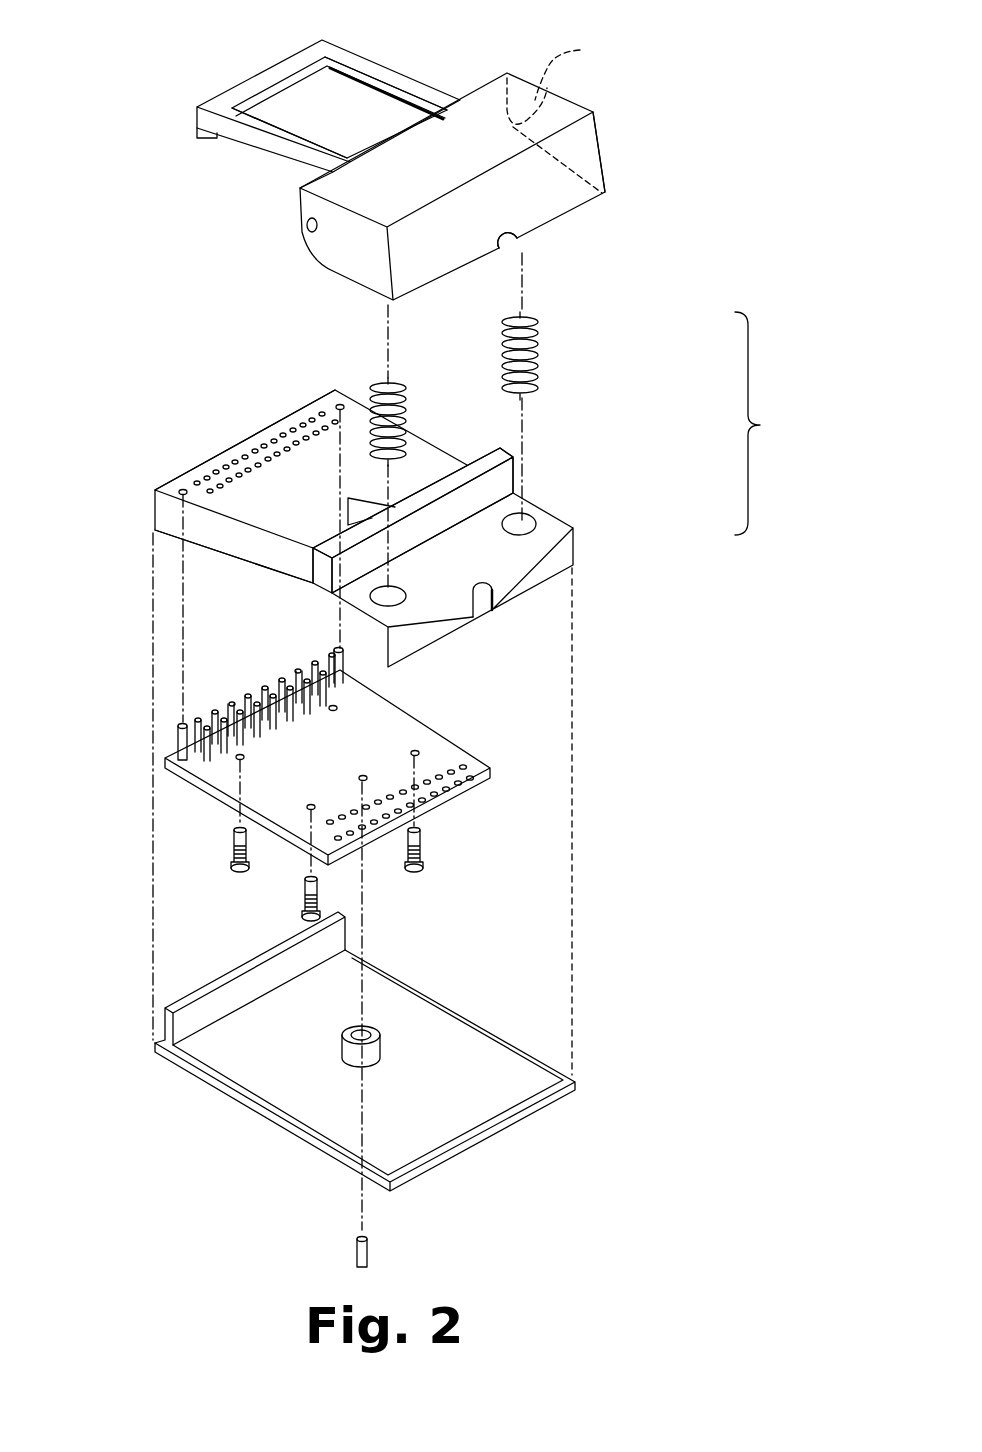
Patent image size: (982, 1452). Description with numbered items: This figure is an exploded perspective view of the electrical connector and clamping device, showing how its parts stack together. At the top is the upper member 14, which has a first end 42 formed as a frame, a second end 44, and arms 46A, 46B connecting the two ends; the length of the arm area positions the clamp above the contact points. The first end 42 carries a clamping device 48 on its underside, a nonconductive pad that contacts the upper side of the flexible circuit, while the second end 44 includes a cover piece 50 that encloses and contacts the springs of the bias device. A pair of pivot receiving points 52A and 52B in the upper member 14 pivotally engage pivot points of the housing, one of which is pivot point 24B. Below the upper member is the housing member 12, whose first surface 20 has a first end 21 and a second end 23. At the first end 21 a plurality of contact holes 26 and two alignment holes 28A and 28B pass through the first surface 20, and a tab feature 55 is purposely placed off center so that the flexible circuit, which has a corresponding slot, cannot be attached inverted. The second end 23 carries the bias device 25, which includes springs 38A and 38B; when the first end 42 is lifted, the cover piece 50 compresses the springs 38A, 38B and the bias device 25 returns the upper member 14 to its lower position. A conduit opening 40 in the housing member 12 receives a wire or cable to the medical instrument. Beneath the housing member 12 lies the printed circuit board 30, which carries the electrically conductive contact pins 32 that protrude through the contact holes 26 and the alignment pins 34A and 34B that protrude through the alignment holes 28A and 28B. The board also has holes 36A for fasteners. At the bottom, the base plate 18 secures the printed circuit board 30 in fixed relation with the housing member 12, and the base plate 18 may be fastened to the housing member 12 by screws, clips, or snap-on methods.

The housing member 12 is at (197, 563).
The upper member 14 is at (615, 117).
The base plate 18 is at (285, 1150).
The first surface 20 is at (163, 473).
The first end 21 is at (215, 430).
The second end 23 is at (587, 529).
The pivot point 24B is at (517, 460).
The bias device 25 is at (768, 423).
The contact holes 26 is at (286, 420).
The alignment hole 28A is at (177, 491).
The alignment hole 28B is at (340, 400).
The printed circuit board 30 is at (485, 800).
The contact pins 32 is at (245, 679).
The alignment pin 34A is at (177, 740).
The alignment pin 34B is at (333, 650).
The spring holes 36A is at (393, 598).
The spring 38A is at (407, 390).
The spring 38B is at (540, 350).
The conduit opening 40 is at (480, 600).
The first end 42 is at (280, 68).
The second end 44 is at (537, 227).
The arm 46A is at (297, 145).
The arm 46B is at (393, 78).
The clamping device 48 is at (202, 132).
The cover piece 50 is at (598, 197).
The pivot receiving point 52A is at (300, 223).
The pivot receiving point 52B is at (584, 64).
The tab feature 55 is at (398, 508).